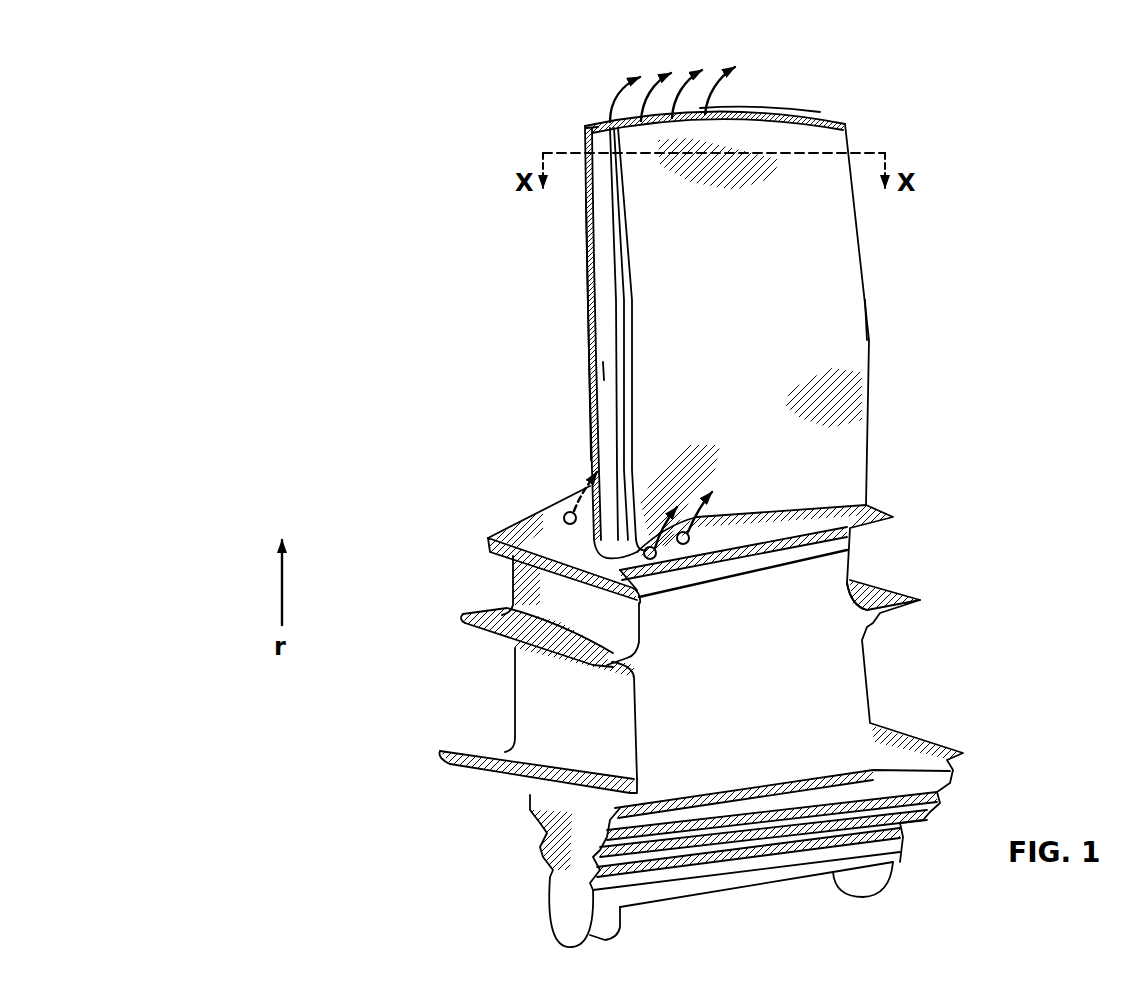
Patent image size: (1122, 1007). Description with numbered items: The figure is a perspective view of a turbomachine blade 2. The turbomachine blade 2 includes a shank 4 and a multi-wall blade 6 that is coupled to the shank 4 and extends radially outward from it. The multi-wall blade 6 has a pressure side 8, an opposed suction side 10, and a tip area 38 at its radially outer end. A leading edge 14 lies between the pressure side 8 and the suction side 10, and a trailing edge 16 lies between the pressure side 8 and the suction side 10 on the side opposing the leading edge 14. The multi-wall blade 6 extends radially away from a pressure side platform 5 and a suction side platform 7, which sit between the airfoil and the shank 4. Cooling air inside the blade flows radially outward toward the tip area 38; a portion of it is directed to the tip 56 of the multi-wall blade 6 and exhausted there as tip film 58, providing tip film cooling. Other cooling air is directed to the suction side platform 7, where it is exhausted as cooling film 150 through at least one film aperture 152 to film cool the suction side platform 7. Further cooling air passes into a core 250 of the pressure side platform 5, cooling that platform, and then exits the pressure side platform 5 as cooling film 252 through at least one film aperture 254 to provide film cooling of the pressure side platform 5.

The turbomachine blade 2 is at (350, 150).
The shank 4 is at (748, 679).
The pressure side platform 5 is at (758, 517).
The multi-wall blade 6 is at (729, 281).
The suction side platform 7 is at (543, 522).
The pressure side 8 is at (845, 358).
The suction side 10 is at (578, 291).
The leading edge 14 is at (603, 362).
The trailing edge 16 is at (866, 270).
The tip area 38 is at (810, 113).
The tip 56 is at (590, 120).
The tip film 58 is at (598, 73).
The cooling film 150 is at (575, 470).
The film aperture 152 is at (568, 510).
The core of the pressure side platform 250 is at (795, 551).
The cooling film 252 is at (708, 478).
The film aperture 254 is at (652, 557).